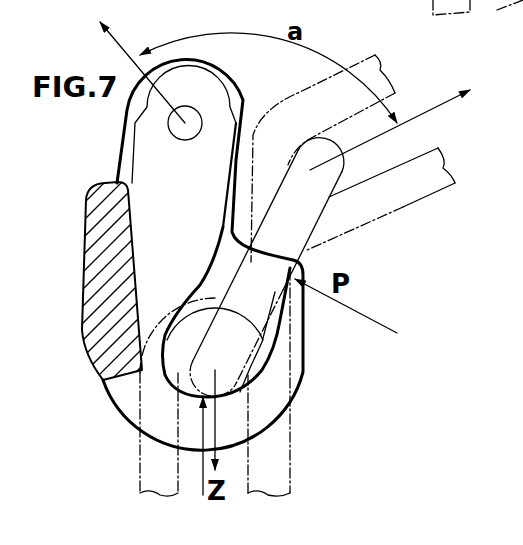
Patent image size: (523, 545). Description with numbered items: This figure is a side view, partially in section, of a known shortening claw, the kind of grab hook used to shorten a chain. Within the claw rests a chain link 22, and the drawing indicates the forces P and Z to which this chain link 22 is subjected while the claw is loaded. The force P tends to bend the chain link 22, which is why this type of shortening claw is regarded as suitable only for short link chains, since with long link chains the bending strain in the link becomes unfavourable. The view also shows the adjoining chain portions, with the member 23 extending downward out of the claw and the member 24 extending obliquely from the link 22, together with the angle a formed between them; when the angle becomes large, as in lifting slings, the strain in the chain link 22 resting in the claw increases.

The chain link 22 is at (309, 221).
The bail / shackle rod 23 is at (285, 455).
The lever rod 24 is at (403, 208).